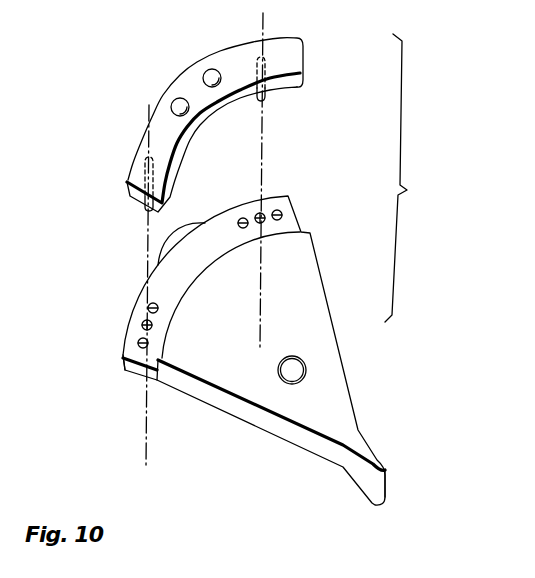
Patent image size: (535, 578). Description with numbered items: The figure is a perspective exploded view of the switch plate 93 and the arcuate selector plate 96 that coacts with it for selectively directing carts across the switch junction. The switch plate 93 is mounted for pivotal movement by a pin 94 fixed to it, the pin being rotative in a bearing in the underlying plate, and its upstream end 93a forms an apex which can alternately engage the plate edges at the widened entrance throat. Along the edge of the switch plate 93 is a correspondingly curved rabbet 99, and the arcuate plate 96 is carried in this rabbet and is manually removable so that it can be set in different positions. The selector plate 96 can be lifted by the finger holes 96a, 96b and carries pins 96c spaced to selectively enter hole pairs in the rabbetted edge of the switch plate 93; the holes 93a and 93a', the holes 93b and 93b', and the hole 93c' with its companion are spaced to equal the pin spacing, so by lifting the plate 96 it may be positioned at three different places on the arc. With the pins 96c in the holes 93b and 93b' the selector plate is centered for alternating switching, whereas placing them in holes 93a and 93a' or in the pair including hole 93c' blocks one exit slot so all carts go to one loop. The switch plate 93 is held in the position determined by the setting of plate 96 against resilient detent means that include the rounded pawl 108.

The switch plate 93 is at (307, 324).
The upstream end 93a is at (258, 426).
The hole 93a' is at (236, 264).
The hole 93b is at (115, 307).
The hole 93b' is at (290, 194).
The hole 93c' is at (257, 255).
The pin 94 is at (303, 362).
The arcuate selector plate 96 is at (190, 90).
The finger hole 96a is at (181, 107).
The finger hole 96b is at (209, 69).
The pins 96c is at (267, 94).
The curved rabbet 99 is at (153, 350).
The rounded pawl 108 is at (176, 229).